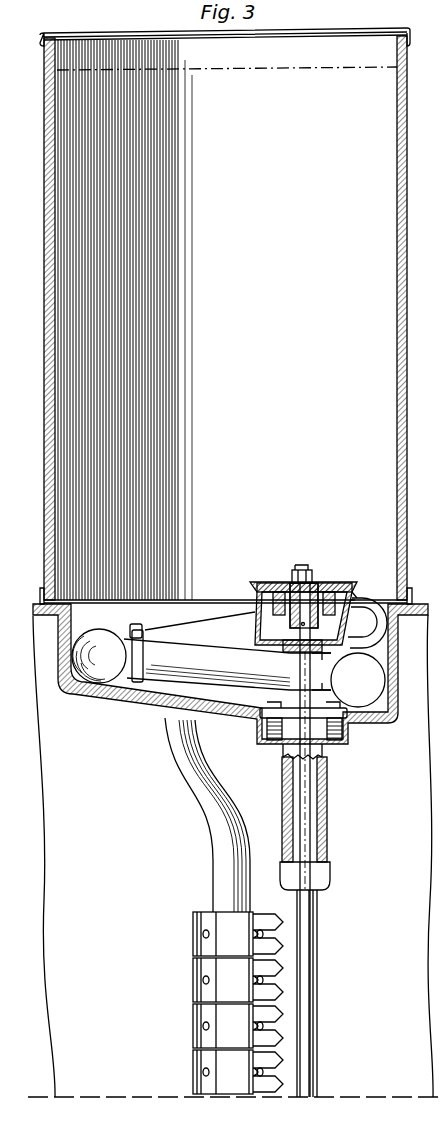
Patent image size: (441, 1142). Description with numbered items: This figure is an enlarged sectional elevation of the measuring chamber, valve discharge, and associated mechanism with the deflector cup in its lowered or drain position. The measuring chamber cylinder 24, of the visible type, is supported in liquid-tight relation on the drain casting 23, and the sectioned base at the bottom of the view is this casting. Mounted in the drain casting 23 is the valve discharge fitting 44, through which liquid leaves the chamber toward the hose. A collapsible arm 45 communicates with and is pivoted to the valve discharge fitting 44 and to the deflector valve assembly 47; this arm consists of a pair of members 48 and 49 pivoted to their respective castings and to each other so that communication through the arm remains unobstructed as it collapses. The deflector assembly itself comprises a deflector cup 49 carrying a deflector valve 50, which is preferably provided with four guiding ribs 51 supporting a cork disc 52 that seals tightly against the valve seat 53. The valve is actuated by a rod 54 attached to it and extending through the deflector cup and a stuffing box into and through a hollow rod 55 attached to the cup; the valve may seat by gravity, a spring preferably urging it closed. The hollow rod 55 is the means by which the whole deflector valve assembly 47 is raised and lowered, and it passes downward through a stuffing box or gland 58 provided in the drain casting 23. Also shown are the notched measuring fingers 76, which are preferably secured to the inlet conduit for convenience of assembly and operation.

The drain casting 23 is at (135, 710).
The measuring chamber cylinder 24 is at (397, 276).
The valve discharge fitting 44 is at (358, 702).
The collapsible arm 45 is at (165, 685).
The deflector valve assembly 47 is at (92, 668).
The arm member 48 is at (128, 692).
The deflector cup 49 is at (168, 633).
The deflector valve 50 is at (287, 578).
The guiding ribs 51 is at (356, 602).
The cork disc 52 is at (283, 590).
The valve seat 53 is at (254, 598).
The rod 54 is at (390, 637).
The hollow rod 55 is at (392, 670).
The stuffing box or gland 58 is at (328, 823).
The measuring finger 76 is at (205, 1068).